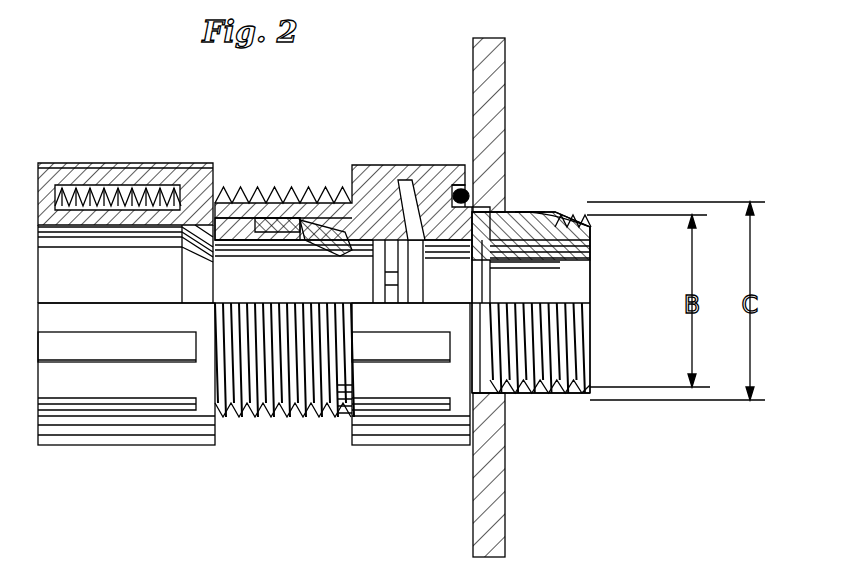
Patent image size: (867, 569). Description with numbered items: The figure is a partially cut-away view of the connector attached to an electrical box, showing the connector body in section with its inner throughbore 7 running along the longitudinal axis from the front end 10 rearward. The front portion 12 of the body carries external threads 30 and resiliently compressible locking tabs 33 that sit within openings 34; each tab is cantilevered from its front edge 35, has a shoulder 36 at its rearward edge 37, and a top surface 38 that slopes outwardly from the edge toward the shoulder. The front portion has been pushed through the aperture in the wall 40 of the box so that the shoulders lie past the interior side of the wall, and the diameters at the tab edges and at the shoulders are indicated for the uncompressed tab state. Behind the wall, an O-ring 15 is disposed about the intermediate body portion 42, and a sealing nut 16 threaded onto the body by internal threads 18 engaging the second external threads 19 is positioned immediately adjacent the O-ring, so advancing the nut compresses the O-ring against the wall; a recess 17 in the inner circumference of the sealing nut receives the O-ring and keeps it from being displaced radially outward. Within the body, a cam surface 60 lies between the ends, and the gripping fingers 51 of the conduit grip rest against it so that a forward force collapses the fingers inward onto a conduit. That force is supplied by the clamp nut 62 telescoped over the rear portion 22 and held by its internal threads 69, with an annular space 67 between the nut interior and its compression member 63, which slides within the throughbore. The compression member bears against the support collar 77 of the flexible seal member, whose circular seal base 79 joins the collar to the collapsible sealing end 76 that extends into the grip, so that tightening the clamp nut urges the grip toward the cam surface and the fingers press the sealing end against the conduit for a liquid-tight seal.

The inner throughbore 7 is at (580, 265).
The front end 10 is at (590, 330).
The front portion 12 is at (485, 403).
The O-ring 15 is at (486, 205).
The sealing nut 16 is at (410, 452).
The recess 17 is at (448, 192).
The internal threads 18 is at (360, 215).
The second external threads 19 is at (402, 210).
The rear portion 22 is at (182, 452).
The external threads 30 is at (590, 357).
The locking tabs 33 is at (550, 215).
The openings 34 is at (520, 252).
The edges 35 is at (568, 217).
The shoulder 36 is at (530, 213).
The rearward edge 37 is at (477, 237).
The top surface 38 is at (540, 213).
The wall 40 is at (495, 72).
The intermediate body portion 42 is at (452, 232).
The gripping fingers 51 is at (315, 200).
The cam surface 60 is at (418, 300).
The clamp nut 62 is at (92, 456).
The compression member 63 is at (200, 248).
The annular space 67 is at (140, 200).
The internal threads 69 is at (130, 185).
The sealing end 76 is at (345, 242).
The support collar 77 is at (252, 232).
The seal base 79 is at (290, 232).